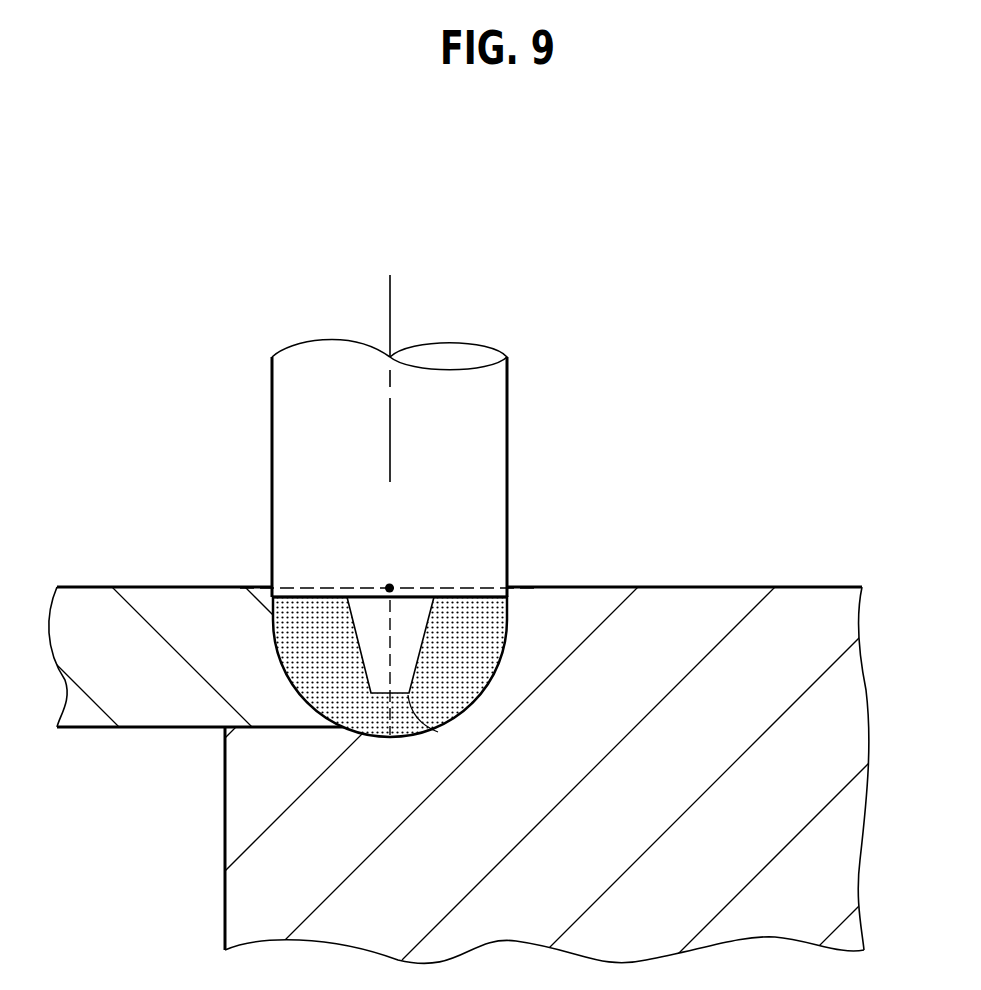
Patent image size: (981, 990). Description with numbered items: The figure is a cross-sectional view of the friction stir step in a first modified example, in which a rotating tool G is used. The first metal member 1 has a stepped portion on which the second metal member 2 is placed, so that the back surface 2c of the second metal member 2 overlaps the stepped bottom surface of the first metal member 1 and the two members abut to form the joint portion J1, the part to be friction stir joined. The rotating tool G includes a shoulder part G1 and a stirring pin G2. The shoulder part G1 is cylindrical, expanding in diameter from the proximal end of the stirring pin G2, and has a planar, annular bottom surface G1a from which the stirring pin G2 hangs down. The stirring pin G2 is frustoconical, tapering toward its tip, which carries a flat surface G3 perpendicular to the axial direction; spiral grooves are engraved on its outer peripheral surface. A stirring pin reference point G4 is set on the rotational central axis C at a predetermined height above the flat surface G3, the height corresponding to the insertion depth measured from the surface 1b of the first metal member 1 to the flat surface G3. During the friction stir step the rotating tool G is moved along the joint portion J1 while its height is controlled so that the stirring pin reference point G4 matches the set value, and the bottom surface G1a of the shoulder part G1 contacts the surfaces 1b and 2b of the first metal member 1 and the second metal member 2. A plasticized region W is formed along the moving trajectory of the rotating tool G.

The first metal member 1 is at (812, 541).
The surface of the first metal member 1b is at (710, 587).
The second metal member 2 is at (84, 563).
The surface of the second metal member 2b is at (138, 587).
The back surface of the second metal member 2c is at (127, 730).
The rotational central axis C is at (391, 308).
The rotating tool G is at (444, 470).
The shoulder part G1 is at (485, 428).
The bottom surface of the shoulder part G1a is at (505, 617).
The stirring pin G2 is at (416, 606).
The flat surface G3 is at (438, 732).
The stirring pin reference point G4 is at (388, 587).
The joint portion J1 is at (388, 566).
The plasticized region W is at (314, 668).